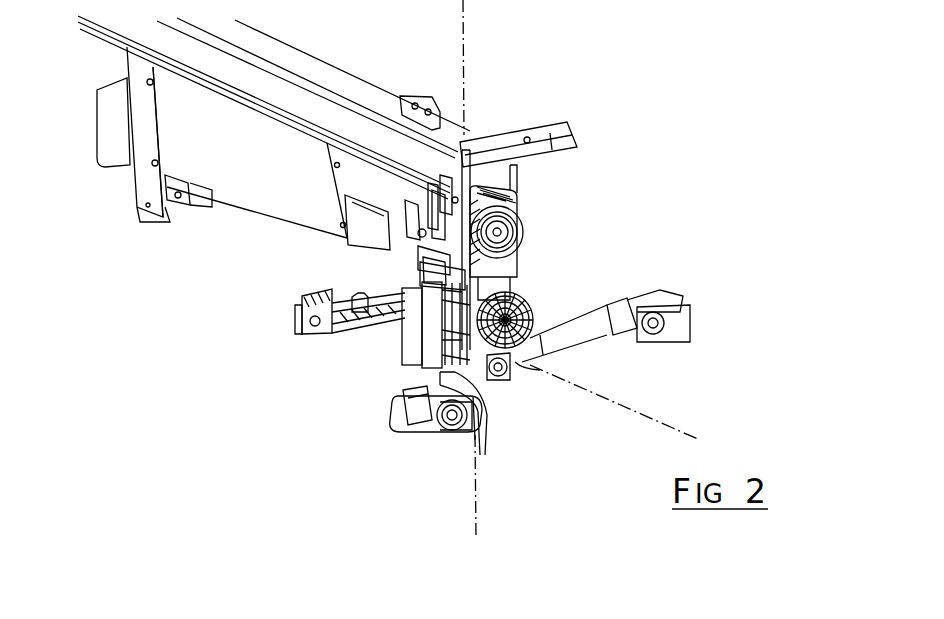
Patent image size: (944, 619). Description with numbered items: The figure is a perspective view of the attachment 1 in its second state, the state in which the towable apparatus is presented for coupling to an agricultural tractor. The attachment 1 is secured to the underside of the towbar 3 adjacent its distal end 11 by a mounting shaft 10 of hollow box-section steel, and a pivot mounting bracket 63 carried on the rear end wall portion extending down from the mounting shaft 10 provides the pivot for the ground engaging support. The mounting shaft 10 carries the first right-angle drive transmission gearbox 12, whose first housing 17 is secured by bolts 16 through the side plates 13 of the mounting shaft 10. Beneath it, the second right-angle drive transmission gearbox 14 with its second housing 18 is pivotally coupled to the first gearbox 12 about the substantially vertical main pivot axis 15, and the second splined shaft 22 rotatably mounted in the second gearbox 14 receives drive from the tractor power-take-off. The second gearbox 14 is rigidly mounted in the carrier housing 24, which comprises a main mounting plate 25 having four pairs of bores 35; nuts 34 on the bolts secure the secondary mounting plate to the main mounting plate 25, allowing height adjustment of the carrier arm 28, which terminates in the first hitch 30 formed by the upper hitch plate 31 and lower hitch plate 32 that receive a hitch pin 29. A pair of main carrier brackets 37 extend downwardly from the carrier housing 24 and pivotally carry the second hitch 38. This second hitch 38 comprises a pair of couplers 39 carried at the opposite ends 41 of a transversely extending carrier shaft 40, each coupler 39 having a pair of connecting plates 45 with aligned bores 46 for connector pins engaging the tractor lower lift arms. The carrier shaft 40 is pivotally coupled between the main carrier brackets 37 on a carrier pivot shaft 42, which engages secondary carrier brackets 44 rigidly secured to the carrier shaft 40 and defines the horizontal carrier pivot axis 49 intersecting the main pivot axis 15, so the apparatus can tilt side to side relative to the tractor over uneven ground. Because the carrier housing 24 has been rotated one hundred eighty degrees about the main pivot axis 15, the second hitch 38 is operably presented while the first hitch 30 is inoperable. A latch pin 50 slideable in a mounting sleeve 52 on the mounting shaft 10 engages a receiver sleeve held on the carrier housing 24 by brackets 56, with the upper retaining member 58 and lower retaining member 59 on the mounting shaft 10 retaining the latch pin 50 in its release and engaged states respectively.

The attachment 1 is at (673, 190).
The towbar 3 is at (275, 50).
The mounting shaft 10 is at (253, 187).
The distal end 11 is at (352, 84).
The first right-angle drive transmission gearbox 12 is at (520, 198).
The side plates 13 is at (350, 200).
The second right-angle drive transmission gearbox 14 is at (533, 267).
The main pivot axis 15 is at (465, 33).
The bolts 16 is at (463, 148).
The first housing 17 is at (517, 197).
The second housing 18 is at (493, 397).
The second splined shaft 22 is at (527, 300).
The carrier housing 24 is at (335, 347).
The main mounting plate 25 is at (412, 297).
The carrier arm 28 is at (300, 333).
The hitch pin 29 is at (300, 320).
The first hitch 30 is at (300, 303).
The upper hitch plate 31 is at (300, 315).
The lower hitch plate 32 is at (300, 348).
The nuts 34 is at (407, 370).
The bores 35 is at (360, 293).
The main carrier brackets 37 is at (569, 298).
The second hitch 38 is at (700, 287).
The couplers 39 is at (680, 302).
The carrier shaft 40 is at (582, 325).
The opposite ends 41 is at (623, 303).
The carrier pivot shaft 42 is at (540, 370).
The secondary carrier brackets 44 is at (486, 405).
The connecting plates 45 is at (667, 297).
The aligned bores 46 is at (680, 320).
The carrier pivot axis 49 is at (640, 415).
The latch pin 50 is at (420, 233).
The mounting sleeve 52 is at (423, 263).
The brackets 56 is at (405, 200).
The upper retaining member 58 is at (434, 189).
The lower retaining member 59 is at (423, 257).
The pivot mounting bracket 63 is at (138, 207).